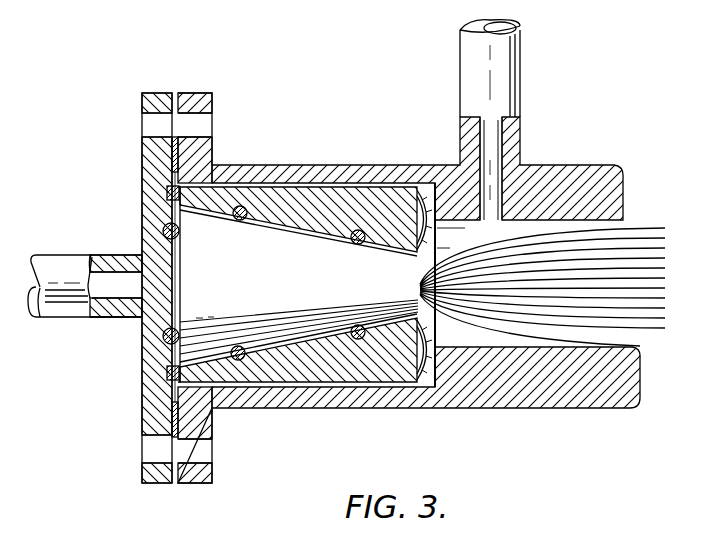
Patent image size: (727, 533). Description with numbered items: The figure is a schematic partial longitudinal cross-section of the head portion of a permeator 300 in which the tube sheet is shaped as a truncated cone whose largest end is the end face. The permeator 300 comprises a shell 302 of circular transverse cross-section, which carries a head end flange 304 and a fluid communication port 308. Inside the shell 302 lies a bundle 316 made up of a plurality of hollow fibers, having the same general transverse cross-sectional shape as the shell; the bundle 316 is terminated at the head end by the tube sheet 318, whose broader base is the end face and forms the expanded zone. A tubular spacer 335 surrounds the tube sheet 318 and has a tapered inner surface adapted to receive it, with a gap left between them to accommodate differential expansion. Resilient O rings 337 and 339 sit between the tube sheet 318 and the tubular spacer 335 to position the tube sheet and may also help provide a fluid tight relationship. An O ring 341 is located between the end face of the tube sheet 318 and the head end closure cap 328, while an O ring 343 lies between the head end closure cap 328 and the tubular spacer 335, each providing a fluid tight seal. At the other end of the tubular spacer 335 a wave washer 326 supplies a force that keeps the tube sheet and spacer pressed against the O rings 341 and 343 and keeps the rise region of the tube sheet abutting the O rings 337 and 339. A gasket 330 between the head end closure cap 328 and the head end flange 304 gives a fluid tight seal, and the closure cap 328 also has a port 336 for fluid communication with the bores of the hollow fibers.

The permeator 300 is at (562, 419).
The shell 302 is at (478, 411).
The head end flange 304 is at (212, 103).
The fluid communication port 308 is at (522, 57).
The bundle 316 is at (613, 272).
The tube sheet 318 is at (270, 278).
The wave washer 326 is at (427, 190).
The head end closure cap 328 is at (140, 406).
The gasket 330 is at (173, 160).
The tubular spacer 335 is at (283, 187).
The port 336 is at (74, 318).
The O ring 337 is at (358, 339).
The O ring 339 is at (238, 360).
The O ring 341 is at (164, 232).
The O ring 343 is at (168, 193).